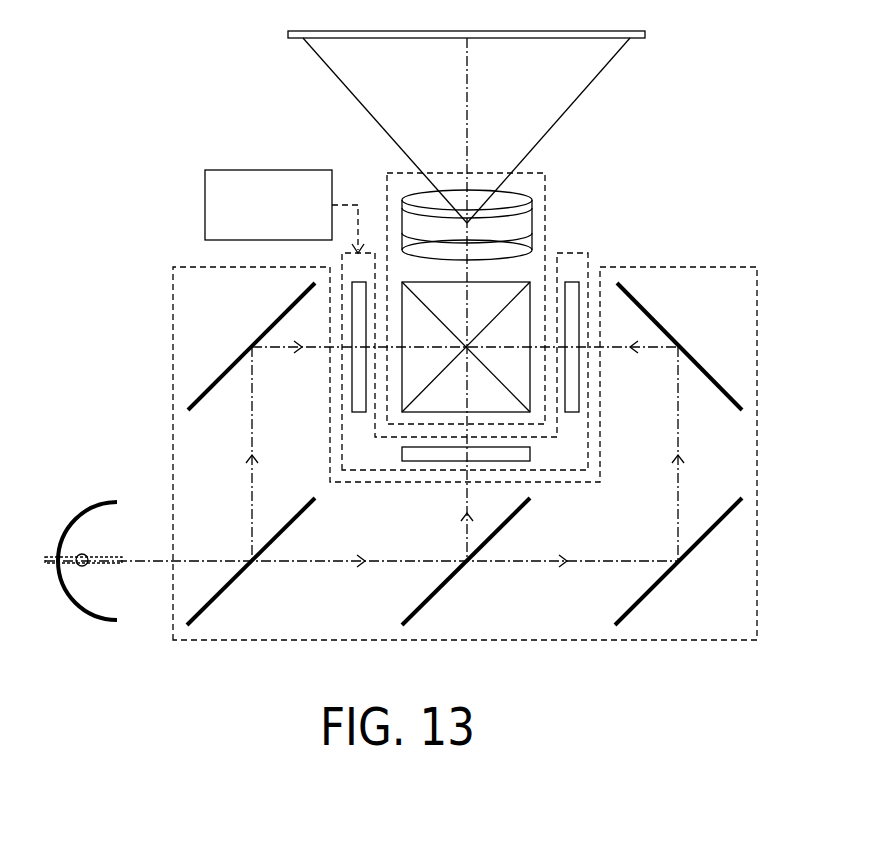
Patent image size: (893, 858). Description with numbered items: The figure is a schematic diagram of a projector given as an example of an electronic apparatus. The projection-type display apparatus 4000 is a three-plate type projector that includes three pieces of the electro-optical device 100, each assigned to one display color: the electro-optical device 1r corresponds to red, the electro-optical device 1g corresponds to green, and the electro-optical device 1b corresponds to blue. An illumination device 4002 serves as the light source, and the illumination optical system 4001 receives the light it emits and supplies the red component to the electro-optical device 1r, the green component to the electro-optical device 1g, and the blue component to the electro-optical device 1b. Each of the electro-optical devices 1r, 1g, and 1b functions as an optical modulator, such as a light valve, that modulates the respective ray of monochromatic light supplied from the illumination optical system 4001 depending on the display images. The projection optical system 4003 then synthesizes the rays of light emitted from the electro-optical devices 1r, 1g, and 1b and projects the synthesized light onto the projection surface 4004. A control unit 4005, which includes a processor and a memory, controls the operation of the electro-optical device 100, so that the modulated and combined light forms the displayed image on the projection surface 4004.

The projection-type display apparatus 4000 is at (170, 110).
The illumination optical system 4001 is at (725, 262).
The illumination device 4002 is at (98, 500).
The projection optical system 4003 is at (547, 218).
The projection surface 4004 is at (517, 40).
The control unit 4005 is at (205, 217).
The electro-optical device 1r is at (352, 398).
The electro-optical device 1g is at (410, 462).
The electro-optical device 1b is at (580, 385).
The electro-optical device 100 is at (463, 416).